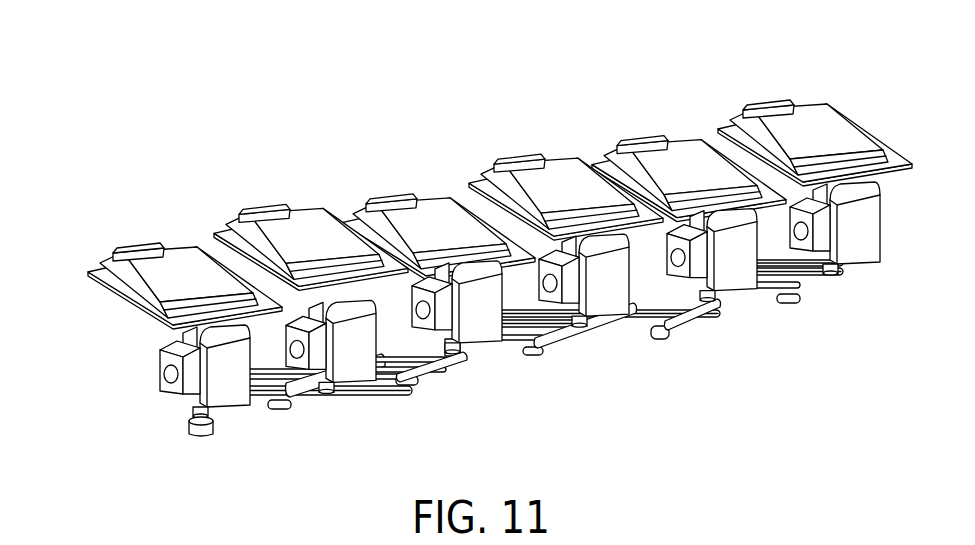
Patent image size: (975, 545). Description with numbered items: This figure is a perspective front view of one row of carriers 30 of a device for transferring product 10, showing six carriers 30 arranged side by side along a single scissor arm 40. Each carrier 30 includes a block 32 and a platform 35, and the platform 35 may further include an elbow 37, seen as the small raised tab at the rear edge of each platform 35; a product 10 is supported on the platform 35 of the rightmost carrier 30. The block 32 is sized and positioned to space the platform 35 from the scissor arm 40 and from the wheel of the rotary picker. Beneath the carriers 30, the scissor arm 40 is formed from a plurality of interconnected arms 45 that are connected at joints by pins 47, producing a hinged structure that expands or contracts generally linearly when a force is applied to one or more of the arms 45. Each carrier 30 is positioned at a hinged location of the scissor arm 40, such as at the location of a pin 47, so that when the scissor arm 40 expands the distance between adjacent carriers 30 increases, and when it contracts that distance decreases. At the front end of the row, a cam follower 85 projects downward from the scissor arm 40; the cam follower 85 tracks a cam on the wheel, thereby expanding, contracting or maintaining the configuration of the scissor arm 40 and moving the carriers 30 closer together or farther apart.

The product 10 is at (809, 104).
The carrier 30 is at (155, 377).
The block 32 is at (835, 295).
The platform 35 is at (815, 118).
The elbow 37 is at (768, 68).
The scissor arm 40 is at (541, 362).
The arm 45 is at (365, 397).
The pin 47 is at (428, 380).
The cam follower 85 is at (201, 437).